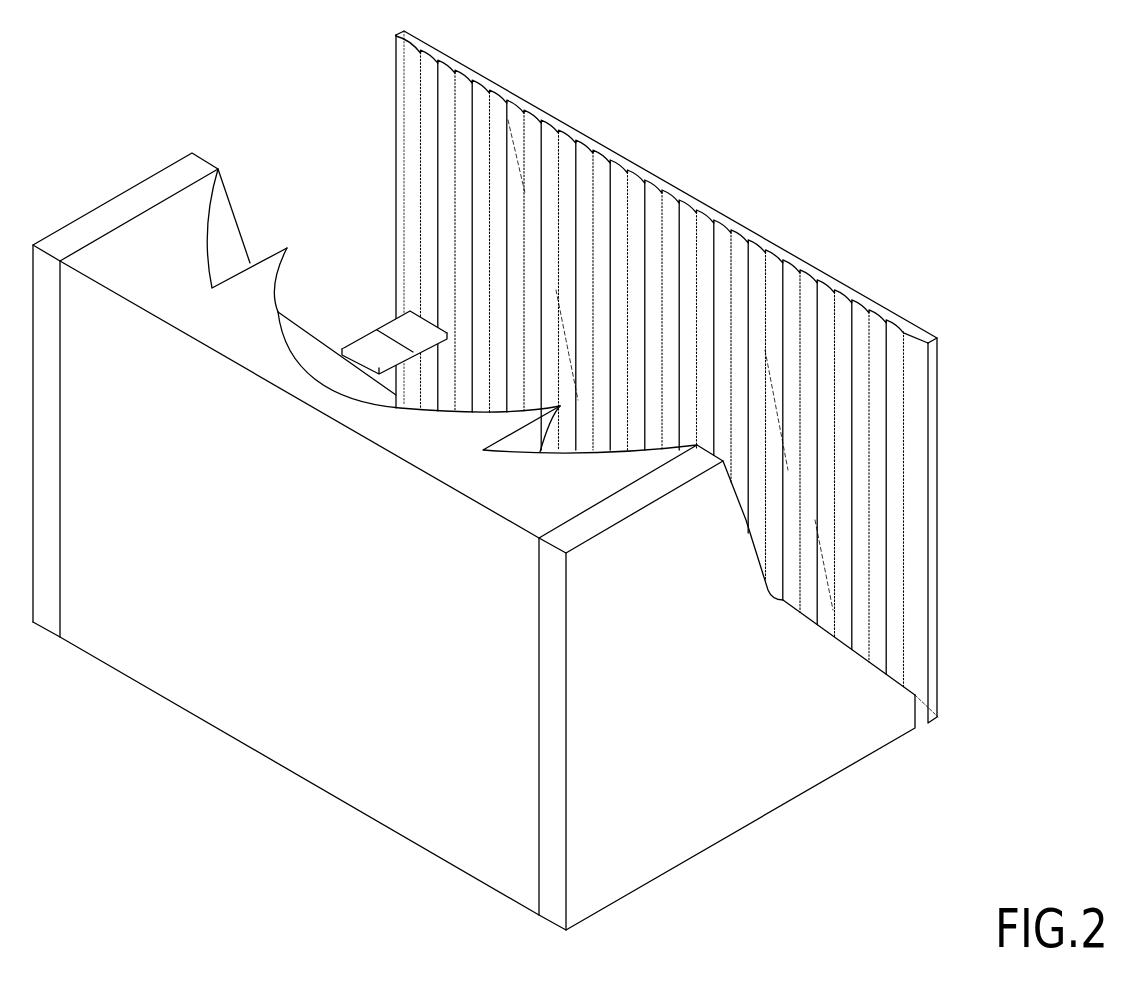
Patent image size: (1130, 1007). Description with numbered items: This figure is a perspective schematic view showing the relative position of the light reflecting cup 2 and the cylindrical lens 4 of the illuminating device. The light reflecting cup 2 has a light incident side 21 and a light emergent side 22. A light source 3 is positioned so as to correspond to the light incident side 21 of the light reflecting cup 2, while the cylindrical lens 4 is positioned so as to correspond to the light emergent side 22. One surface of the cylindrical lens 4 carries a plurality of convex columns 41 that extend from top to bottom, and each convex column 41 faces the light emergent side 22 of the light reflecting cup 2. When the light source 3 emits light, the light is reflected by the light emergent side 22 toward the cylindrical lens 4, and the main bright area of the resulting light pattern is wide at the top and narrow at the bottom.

The light-reflecting cup 2 is at (823, 793).
The light incident side 21 is at (286, 148).
The light emergent side 22 is at (637, 222).
The light source 3 is at (375, 327).
The cylindrical lens 4 is at (833, 277).
The convex column 41 is at (888, 343).